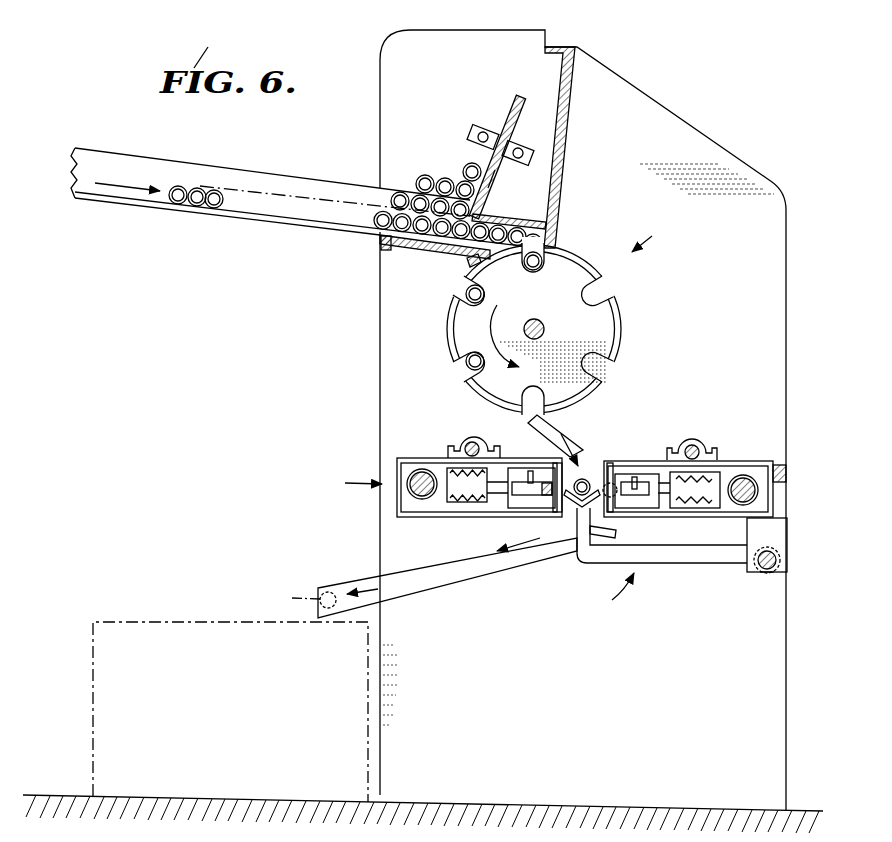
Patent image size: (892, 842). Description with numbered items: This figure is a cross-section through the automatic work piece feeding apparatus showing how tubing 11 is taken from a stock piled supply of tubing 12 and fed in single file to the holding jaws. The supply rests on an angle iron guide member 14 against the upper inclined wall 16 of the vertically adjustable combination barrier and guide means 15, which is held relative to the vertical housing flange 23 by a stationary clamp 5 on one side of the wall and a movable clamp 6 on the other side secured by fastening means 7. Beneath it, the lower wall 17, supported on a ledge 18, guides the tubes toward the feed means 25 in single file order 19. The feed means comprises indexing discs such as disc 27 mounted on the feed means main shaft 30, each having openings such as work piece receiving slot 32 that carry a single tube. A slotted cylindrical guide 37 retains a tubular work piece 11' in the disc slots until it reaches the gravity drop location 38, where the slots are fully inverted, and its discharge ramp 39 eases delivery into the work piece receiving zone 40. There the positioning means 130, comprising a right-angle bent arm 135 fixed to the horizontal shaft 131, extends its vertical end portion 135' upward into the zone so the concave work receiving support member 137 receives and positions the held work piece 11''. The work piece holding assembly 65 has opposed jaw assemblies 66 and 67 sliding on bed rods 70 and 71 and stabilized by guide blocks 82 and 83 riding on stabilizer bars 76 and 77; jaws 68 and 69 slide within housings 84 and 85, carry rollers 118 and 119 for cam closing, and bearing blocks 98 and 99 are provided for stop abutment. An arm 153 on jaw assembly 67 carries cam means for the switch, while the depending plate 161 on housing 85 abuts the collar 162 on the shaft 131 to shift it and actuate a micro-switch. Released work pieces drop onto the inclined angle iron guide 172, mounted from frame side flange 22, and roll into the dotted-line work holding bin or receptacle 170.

The apparatus frame side flange 22 is at (765, 764).
The angle iron guide member 14 is at (292, 178).
The tubing 11 is at (196, 173).
The supply of tubing 12 is at (418, 166).
The upper inclined wall 16 is at (478, 165).
The combination barrier and guide means 15 is at (513, 86).
The stationary clamp 5 is at (491, 128).
The movable clamp 6 is at (522, 148).
The fastening means 7 is at (514, 158).
The vertical housing flange 23 is at (566, 136).
The lower wall 17 is at (503, 213).
The single file supply of work pieces 19 is at (542, 232).
The ledge 18 is at (433, 254).
The feed means 25 is at (651, 234).
The indexing disc 27 is at (615, 331).
The feed means main shaft 30 is at (538, 320).
The work piece receiving slot 32 is at (604, 290).
The cylindrical guide 37 is at (613, 371).
The gravity drop location 38 is at (526, 413).
The tubular work piece 11' is at (477, 314).
The discharge ramp 39 is at (566, 421).
The work piece receiving zone 40 is at (612, 438).
The concave work receiving support member 137 is at (576, 510).
The jaw assembly 66 is at (420, 458).
The work piece holding assembly 65 is at (351, 483).
The bed rod 70 is at (416, 497).
The jaw assembly housing 84 is at (472, 515).
The bearing block 98 is at (500, 508).
The jaw 68 is at (540, 508).
The roller 118 is at (531, 470).
The guide block 82 is at (486, 446).
The stabilizer bar 76 is at (466, 443).
The jaw assembly 67 is at (757, 468).
The bed rod 71 is at (758, 493).
The jaw assembly housing 85 is at (695, 510).
The bearing block 99 is at (661, 508).
The jaw 69 is at (618, 508).
The roller 119 is at (637, 476).
The held work piece 11'' is at (458, 524).
The stabilizer bar 77 is at (702, 449).
The guide block 83 is at (691, 445).
The arm 153 is at (788, 473).
The positioning arm 135 is at (662, 553).
The vertical end portion 135' is at (573, 553).
The positioning means 130 is at (607, 591).
The depending plate 161 is at (770, 538).
The positioning means shaft 131 is at (778, 560).
The collar 162 is at (767, 574).
The angle iron guide 172 is at (358, 578).
The work holding bin or receptacle 170 is at (178, 622).